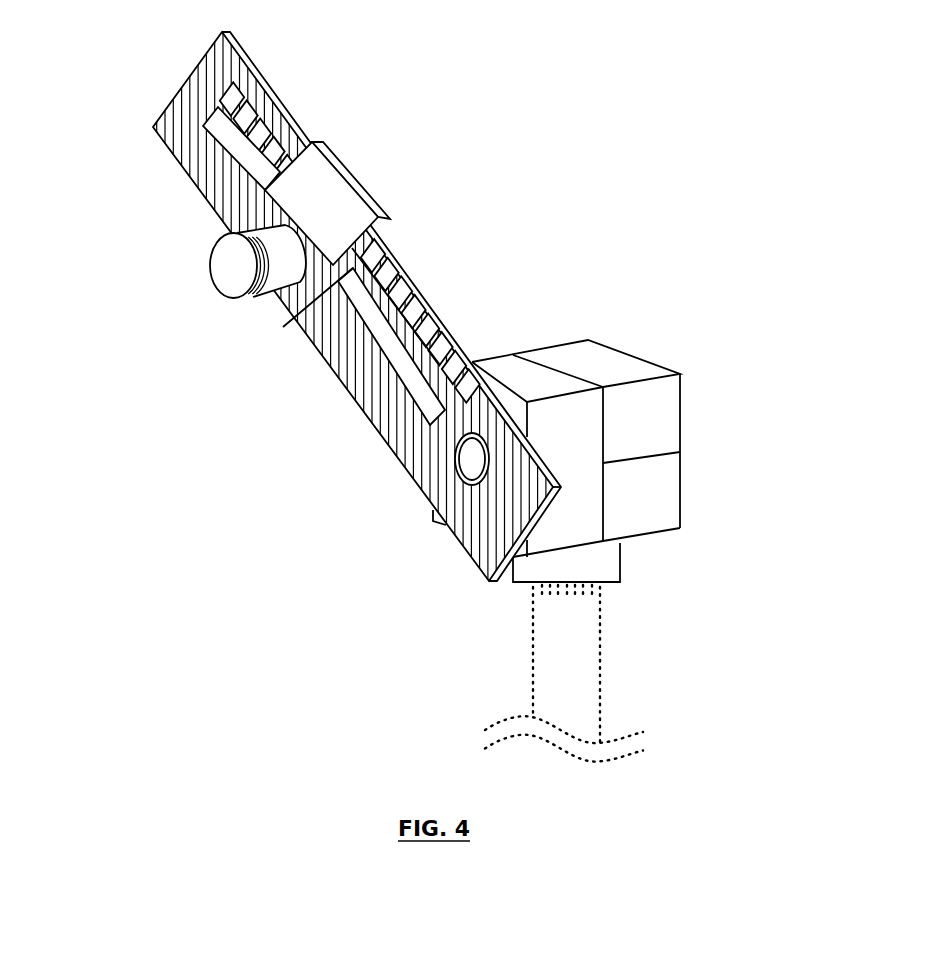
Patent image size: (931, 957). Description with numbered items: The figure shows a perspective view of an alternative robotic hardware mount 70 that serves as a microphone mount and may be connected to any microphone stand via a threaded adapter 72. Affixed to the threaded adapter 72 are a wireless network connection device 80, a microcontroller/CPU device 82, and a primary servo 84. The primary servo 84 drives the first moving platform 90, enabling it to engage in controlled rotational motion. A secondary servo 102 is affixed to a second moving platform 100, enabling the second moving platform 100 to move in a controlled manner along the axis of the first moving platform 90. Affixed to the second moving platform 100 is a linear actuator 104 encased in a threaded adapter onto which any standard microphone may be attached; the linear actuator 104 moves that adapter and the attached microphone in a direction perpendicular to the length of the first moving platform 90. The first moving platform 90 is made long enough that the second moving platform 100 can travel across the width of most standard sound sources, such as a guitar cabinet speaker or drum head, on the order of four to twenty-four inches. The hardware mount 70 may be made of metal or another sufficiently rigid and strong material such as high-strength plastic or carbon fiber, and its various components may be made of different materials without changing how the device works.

The robotic hardware mount 70 is at (662, 247).
The threaded adapter 72 is at (623, 563).
The wireless network connection device 80 is at (685, 497).
The microcontroller/CPU device 82 is at (683, 406).
The primary servo 84 is at (492, 356).
The first moving platform 90 is at (390, 449).
The second moving platform 100 is at (268, 318).
The secondary servo 102 is at (358, 183).
The linear actuator 104 is at (211, 263).